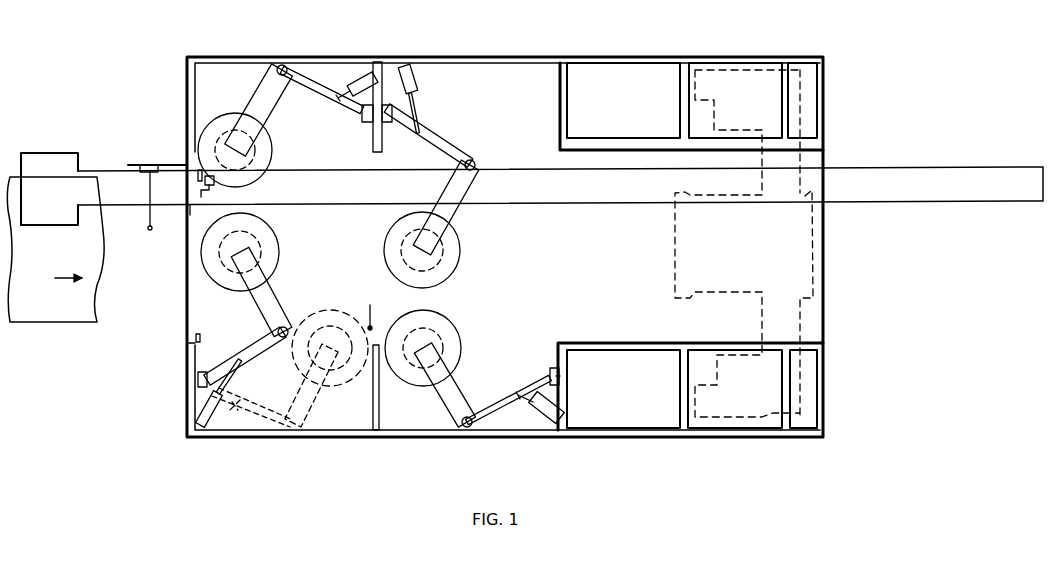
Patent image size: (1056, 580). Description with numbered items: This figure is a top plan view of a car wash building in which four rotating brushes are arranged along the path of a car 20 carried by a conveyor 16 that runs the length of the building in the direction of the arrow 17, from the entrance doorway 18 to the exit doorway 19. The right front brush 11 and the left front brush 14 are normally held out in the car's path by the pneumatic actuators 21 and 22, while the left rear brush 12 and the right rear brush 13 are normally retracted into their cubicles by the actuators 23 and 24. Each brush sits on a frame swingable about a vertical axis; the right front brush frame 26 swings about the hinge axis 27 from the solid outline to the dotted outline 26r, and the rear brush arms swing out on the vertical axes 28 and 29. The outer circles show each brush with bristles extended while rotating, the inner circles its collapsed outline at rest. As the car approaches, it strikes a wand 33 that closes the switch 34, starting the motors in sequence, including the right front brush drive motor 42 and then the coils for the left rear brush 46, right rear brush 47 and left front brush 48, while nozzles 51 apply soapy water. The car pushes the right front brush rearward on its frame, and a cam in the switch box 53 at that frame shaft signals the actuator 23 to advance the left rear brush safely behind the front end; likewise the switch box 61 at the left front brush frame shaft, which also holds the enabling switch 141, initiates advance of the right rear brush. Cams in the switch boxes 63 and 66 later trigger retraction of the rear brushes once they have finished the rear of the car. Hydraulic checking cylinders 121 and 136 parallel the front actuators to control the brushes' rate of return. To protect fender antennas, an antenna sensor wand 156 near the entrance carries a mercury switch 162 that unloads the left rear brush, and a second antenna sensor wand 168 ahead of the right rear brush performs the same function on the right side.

The right front brush 11 is at (288, 478).
The left rear brush 12 is at (235, 155).
The right rear brush 13 is at (423, 348).
The left front brush 14 is at (422, 251).
The conveyor 16 is at (118, 172).
The arrow 17 is at (57, 280).
The entrance doorway 18 is at (190, 343).
The exit doorway 19 is at (823, 335).
The car 20 is at (60, 318).
The pneumatic actuator 21 is at (200, 406).
The pneumatic actuator 22 is at (418, 78).
The pneumatic actuator 23 is at (355, 74).
The pneumatic actuator 24 is at (558, 404).
The right front brush frame 26 is at (246, 362).
The dotted outline of brush frame 26r is at (312, 405).
The hinge axis 27 is at (200, 368).
The vertical axis 28 is at (370, 112).
The vertical axis 29 is at (556, 376).
The wand 33 is at (147, 228).
The switch 34 is at (140, 163).
The right front brush drive motor 42 is at (293, 333).
The left rear brush motor coil 46 is at (286, 65).
The right rear brush motor control coil 47 is at (468, 436).
The left front brush motor coil 48 is at (474, 170).
The nozzles 51 is at (197, 175).
The switch box 53 is at (198, 380).
The switch box 61 is at (391, 125).
The switch box 63 is at (360, 114).
The switch box 66 is at (548, 375).
The hydraulic checking cylinder 121 is at (210, 432).
The hydraulic checking cylinder 136 is at (414, 66).
The enabling switch 141 is at (396, 110).
The antenna sensor wand 156 is at (190, 215).
The mercury switch 162 is at (205, 183).
The antenna sensor wand 168 is at (373, 322).